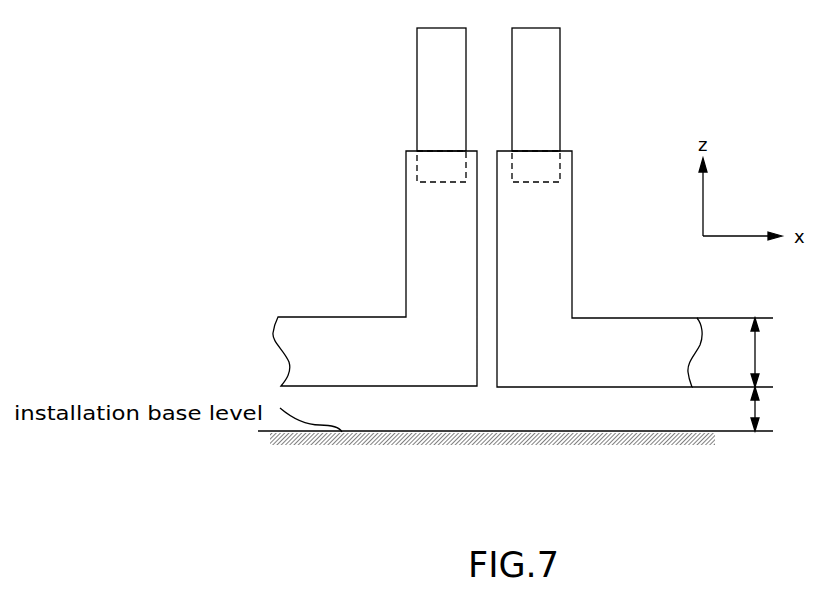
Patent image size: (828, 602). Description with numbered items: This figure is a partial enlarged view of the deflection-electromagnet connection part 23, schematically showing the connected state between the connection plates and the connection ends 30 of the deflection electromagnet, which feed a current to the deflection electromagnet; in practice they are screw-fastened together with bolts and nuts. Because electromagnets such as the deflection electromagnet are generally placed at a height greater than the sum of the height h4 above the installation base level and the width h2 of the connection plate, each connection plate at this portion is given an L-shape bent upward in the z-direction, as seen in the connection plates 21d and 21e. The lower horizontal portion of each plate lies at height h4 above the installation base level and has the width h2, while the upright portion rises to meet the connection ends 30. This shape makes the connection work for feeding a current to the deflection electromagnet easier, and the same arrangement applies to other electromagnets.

The connection end 30 is at (551, 80).
The deflection-electromagnet connection part 23 is at (378, 138).
The connection plate 21e is at (417, 220).
The connection plate 21d is at (556, 212).
The width of the connection plate h2 is at (778, 352).
The height from the installation base level h4 is at (778, 409).